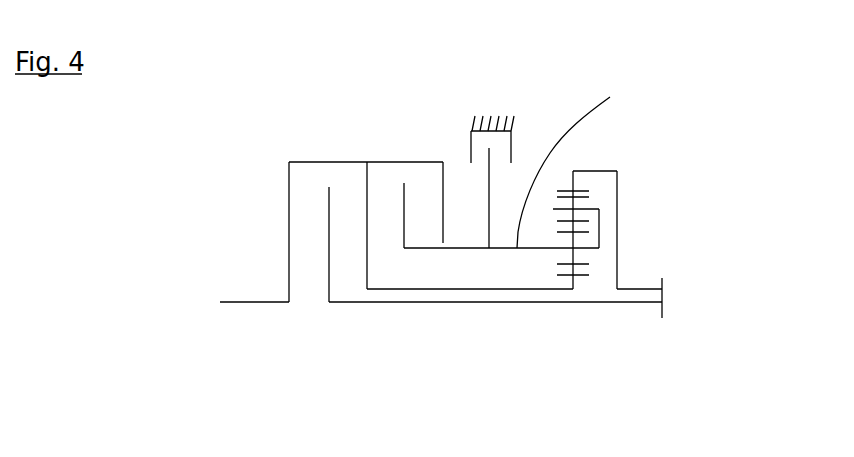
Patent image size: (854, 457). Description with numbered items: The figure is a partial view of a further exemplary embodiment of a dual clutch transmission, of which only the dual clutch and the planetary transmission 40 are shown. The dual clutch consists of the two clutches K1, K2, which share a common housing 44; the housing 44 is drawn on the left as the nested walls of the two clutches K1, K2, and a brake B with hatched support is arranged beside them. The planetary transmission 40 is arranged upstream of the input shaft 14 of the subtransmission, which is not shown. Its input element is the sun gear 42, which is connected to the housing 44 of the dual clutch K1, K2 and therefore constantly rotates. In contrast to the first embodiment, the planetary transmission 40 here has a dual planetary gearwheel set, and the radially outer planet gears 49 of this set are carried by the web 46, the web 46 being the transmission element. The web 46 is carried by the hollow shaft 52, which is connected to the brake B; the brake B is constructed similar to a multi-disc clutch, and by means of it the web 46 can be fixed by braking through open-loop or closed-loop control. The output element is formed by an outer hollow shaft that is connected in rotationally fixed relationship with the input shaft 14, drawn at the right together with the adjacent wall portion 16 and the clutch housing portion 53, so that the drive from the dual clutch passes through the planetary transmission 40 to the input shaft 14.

The input shaft 14 is at (643, 288).
The housing wall 16 is at (640, 304).
The planetary transmission 40 is at (577, 320).
The sun gear 42 is at (568, 285).
The housing 44 is at (289, 227).
The web 46 is at (600, 218).
The radially outer planet gears 49 is at (582, 200).
The hollow shaft 52 is at (610, 97).
The clutch housing 53 is at (601, 171).
The first clutch of the dual clutch K1 is at (415, 152).
The second clutch of the dual clutch K2 is at (322, 152).
The brake B is at (490, 106).